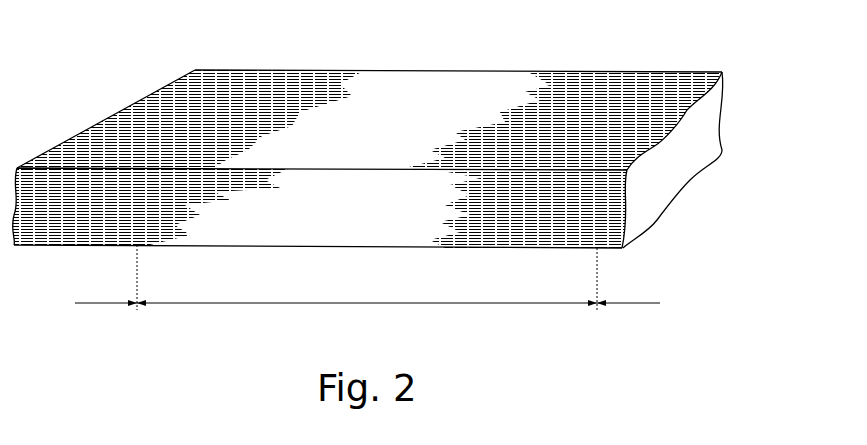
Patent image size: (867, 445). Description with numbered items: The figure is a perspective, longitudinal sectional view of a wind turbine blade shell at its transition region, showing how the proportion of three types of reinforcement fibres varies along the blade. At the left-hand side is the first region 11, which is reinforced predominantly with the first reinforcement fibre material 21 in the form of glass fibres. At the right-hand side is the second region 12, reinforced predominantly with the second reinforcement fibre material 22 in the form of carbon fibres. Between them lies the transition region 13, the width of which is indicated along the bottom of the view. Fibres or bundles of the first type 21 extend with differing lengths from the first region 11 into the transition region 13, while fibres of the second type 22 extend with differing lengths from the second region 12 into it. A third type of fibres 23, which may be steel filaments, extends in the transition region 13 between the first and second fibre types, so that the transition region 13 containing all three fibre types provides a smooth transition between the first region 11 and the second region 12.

The first reinforcement fibre material 21 is at (152, 93).
The second reinforcement fibre material 22 is at (674, 80).
The third type of fibres 23 is at (453, 70).
The first region 11 is at (106, 288).
The second region 12 is at (628, 289).
The transition region 13 is at (367, 289).